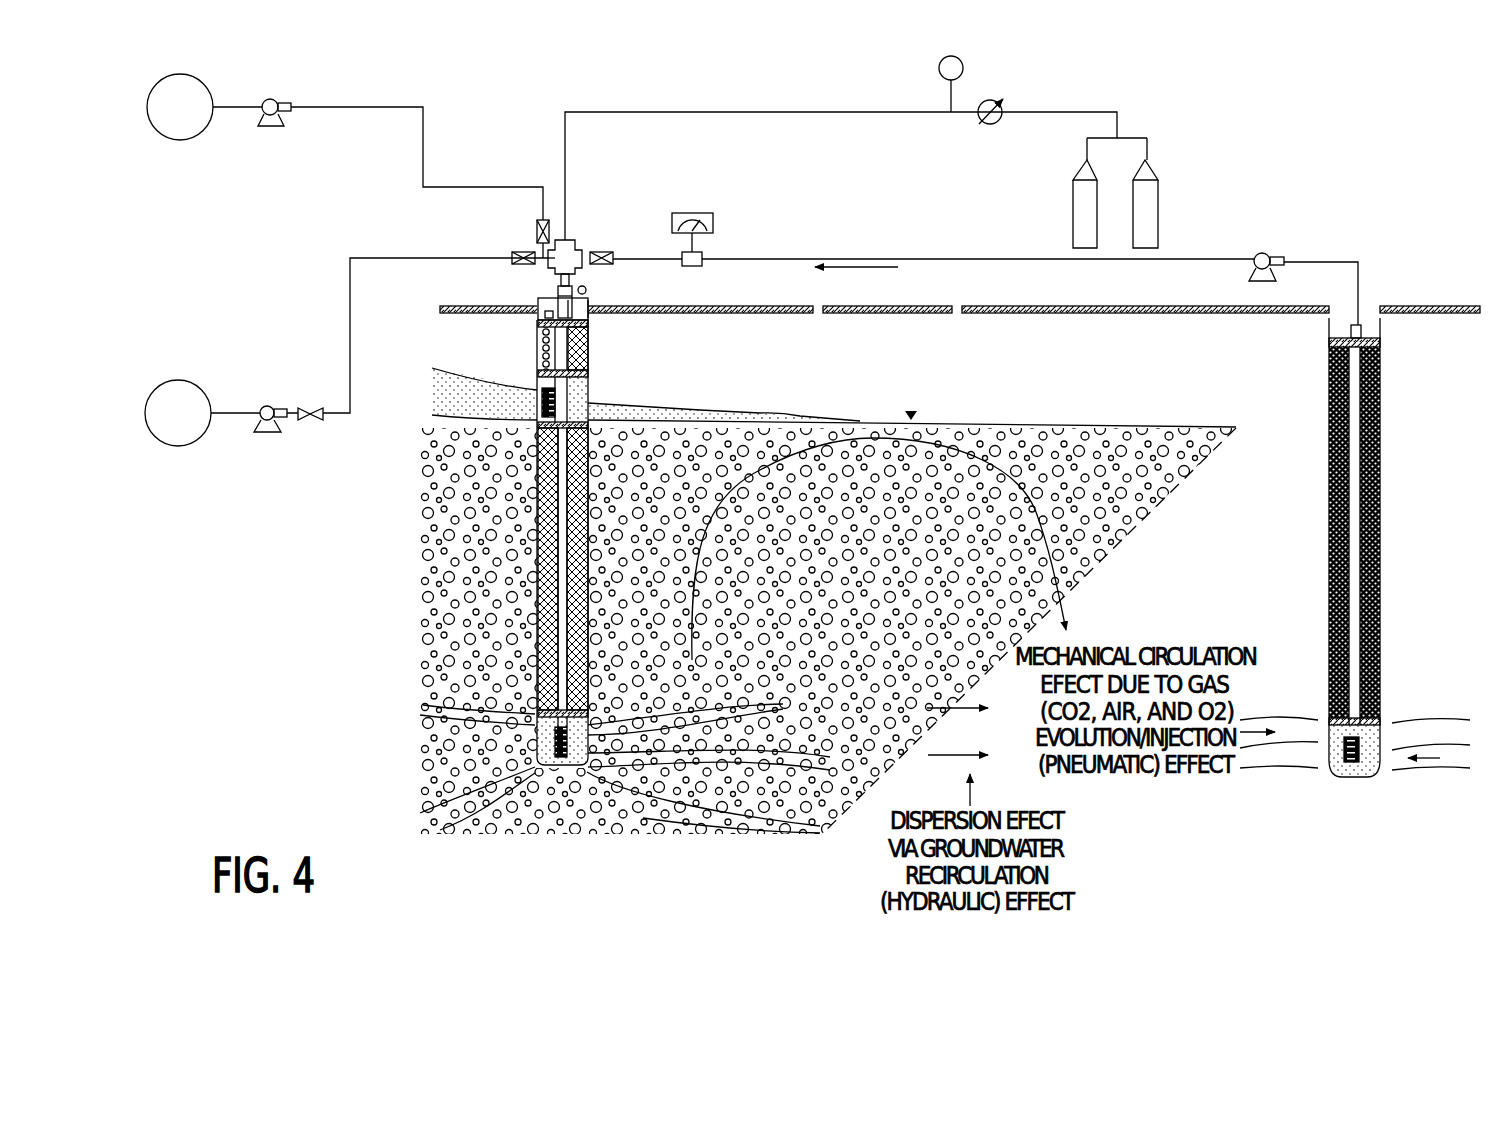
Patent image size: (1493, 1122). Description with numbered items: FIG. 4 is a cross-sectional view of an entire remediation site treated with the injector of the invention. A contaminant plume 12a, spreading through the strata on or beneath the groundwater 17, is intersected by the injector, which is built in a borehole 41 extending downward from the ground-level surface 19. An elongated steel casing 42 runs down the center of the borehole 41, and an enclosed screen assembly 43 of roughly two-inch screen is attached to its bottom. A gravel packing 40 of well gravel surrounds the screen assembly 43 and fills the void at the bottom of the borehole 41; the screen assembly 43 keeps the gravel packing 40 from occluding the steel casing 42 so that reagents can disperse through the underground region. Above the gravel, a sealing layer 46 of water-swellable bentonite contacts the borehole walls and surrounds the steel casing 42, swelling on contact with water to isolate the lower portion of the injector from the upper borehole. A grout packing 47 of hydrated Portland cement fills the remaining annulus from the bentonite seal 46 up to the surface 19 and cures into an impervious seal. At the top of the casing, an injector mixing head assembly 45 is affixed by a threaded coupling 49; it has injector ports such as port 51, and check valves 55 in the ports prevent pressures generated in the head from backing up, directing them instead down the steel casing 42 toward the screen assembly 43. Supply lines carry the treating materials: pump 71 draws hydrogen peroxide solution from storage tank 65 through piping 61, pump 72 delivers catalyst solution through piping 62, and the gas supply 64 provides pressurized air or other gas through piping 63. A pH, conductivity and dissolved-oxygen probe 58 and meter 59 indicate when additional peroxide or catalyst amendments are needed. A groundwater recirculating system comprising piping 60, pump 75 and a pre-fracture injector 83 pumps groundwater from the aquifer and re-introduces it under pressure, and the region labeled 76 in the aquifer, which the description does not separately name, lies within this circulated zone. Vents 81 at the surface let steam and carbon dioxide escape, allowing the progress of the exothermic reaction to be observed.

The contaminant plume 12a is at (465, 397).
The groundwater 17 is at (912, 412).
The ground-level surface 19 is at (1430, 297).
The gravel packing 40 is at (590, 395).
The borehole 41 is at (497, 573).
The steel casing 42 is at (548, 602).
The screen assembly 43 is at (538, 388).
The injector mixing head assembly 45 is at (580, 246).
The sealing layer 46 is at (592, 325).
The grout packing 47 is at (535, 492).
The threaded coupling 49 is at (572, 300).
The injector port 51 is at (547, 266).
The check valves 55 is at (533, 231).
The pH, conductivity and dissolved oxygen probe 58 is at (691, 272).
The meter 59 is at (698, 220).
The piping 60 is at (985, 280).
The piping 61 is at (378, 169).
The piping 62 is at (379, 323).
The piping 63 is at (856, 148).
The gas supply 64 is at (1162, 192).
The storage tank 65 is at (179, 260).
The pump 71 is at (273, 126).
The pump 72 is at (269, 432).
The pumps 75 is at (1265, 255).
The circulation zone 76 is at (828, 631).
The vents 81 is at (950, 304).
The pre-fracture injector 83 is at (1390, 337).